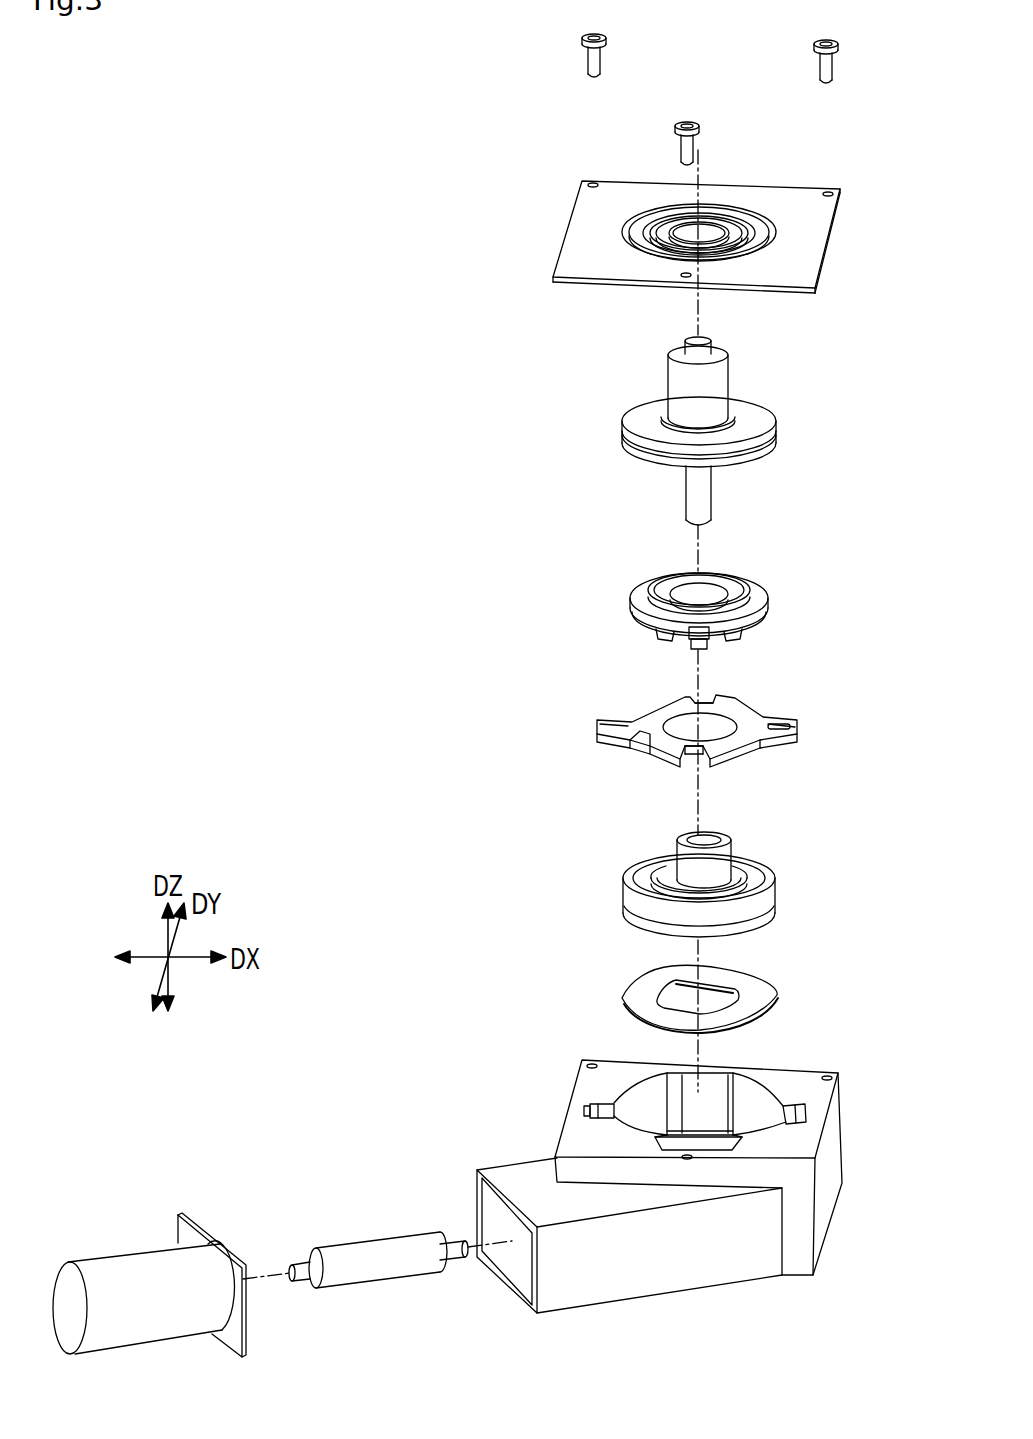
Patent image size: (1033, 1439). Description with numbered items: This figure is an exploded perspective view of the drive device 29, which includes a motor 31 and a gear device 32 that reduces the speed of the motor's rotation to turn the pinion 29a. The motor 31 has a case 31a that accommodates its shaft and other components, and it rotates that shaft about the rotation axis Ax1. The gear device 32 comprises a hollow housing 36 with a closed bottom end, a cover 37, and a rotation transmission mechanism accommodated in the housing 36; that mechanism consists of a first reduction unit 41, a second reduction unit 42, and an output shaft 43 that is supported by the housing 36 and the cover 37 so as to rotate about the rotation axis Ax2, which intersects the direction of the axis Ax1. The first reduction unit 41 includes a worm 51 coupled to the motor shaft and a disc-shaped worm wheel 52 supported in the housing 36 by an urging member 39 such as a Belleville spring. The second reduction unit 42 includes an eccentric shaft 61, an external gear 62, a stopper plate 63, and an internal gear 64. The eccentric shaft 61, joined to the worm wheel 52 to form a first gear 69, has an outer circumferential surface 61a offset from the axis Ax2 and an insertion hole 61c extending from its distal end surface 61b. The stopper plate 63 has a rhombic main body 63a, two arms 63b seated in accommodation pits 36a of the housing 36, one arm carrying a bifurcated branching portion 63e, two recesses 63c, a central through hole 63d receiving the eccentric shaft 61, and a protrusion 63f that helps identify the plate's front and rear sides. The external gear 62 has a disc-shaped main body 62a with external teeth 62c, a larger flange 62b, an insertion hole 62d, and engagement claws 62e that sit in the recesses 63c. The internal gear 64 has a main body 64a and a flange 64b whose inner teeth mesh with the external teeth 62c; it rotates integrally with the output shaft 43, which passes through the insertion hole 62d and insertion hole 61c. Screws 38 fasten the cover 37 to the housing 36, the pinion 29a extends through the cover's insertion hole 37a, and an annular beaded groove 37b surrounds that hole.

The drive device 29 is at (470, 443).
The pinion 29a is at (727, 373).
The motor 31 is at (88, 1262).
The case 31a is at (160, 1256).
The gear device 32 is at (500, 640).
The housing 36 is at (659, 1175).
The accommodation pit 36a is at (600, 1108).
The cover 37 is at (696, 213).
The insertion hole 37a is at (712, 232).
The groove 37b is at (757, 227).
The screw 38 is at (585, 55).
The urging member 39 is at (774, 984).
The first reduction unit 41 is at (330, 1172).
The second reduction unit 42 is at (510, 802).
The output shaft 43 is at (711, 493).
The worm 51 is at (368, 1239).
The worm wheel 52 is at (640, 892).
The eccentric shaft 61 is at (714, 849).
The outer circumferential surface 61a is at (745, 866).
The distal end surface 61b is at (735, 843).
The insertion hole 61c is at (697, 840).
The external gear 62 is at (694, 586).
The main body 62a is at (668, 588).
The flange 62b is at (632, 619).
The external teeth 62c is at (762, 620).
The insertion hole 62d is at (714, 592).
The engagement claw 62e is at (689, 644).
The stopper plate 63 is at (720, 734).
The main body 63a is at (752, 708).
The arm 63b is at (614, 720).
The recess 63c is at (716, 700).
The through hole 63d is at (690, 722).
The branching portion 63e is at (790, 726).
The protrusion 63f is at (647, 760).
The internal gear 64 is at (661, 409).
The main body 64a is at (640, 418).
The flange 64b is at (625, 434).
The first gear 69 is at (562, 842).
The rotation axis Ax1 is at (268, 1288).
The rotation axis Ax2 is at (703, 153).